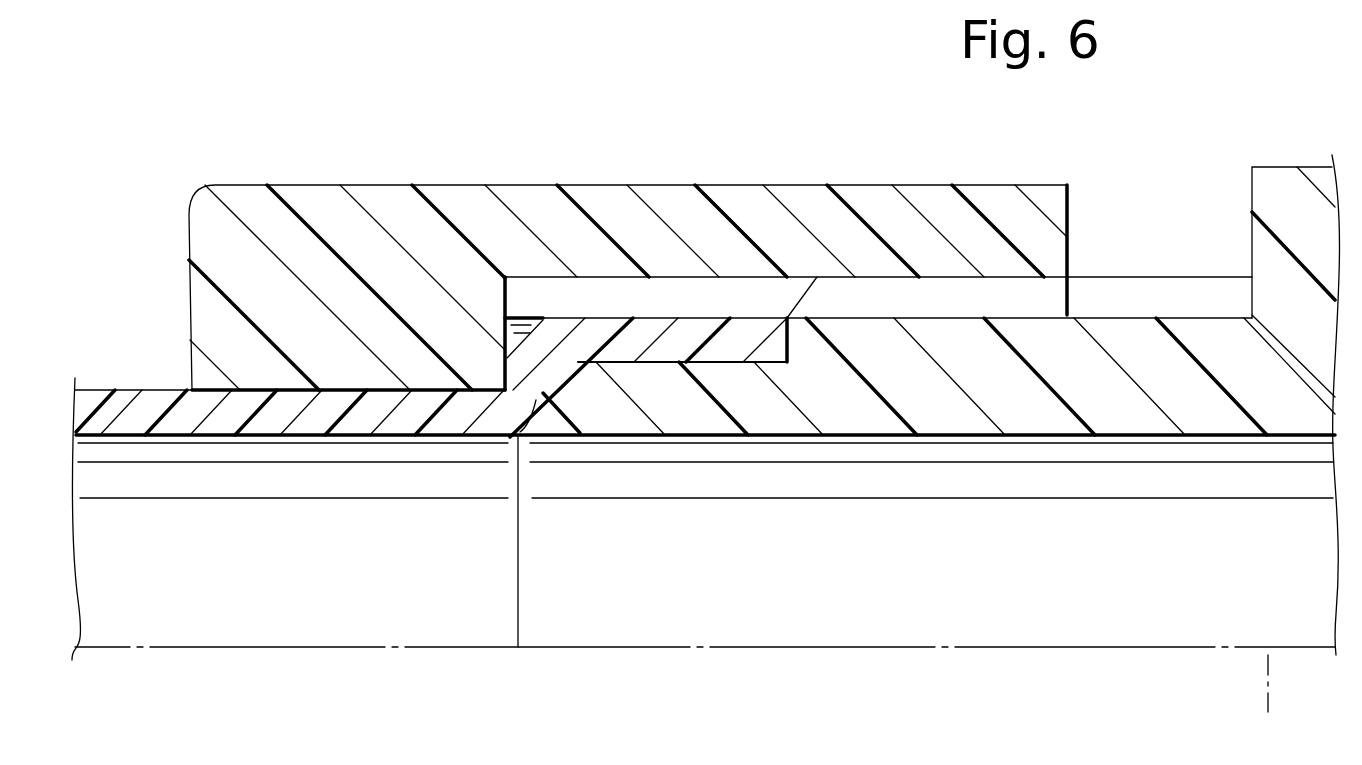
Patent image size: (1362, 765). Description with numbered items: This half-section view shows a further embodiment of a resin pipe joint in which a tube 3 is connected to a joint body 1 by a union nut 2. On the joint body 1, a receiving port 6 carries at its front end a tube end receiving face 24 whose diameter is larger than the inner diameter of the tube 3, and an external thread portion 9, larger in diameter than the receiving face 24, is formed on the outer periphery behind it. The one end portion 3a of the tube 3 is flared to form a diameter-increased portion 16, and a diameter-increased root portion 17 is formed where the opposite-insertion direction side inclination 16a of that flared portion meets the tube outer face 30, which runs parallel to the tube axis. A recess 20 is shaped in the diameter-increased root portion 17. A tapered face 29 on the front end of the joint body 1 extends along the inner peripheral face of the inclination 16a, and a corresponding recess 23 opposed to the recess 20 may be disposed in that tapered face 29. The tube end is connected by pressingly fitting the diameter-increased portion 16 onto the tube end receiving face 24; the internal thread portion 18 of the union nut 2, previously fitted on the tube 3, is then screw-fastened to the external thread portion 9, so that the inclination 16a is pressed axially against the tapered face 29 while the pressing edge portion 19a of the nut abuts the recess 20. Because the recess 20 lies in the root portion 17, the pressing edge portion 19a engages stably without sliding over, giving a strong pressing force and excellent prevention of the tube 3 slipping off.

The joint body 1 is at (1273, 167).
The union nut 2 is at (215, 183).
The tube 3 is at (97, 390).
The one end portion of the tube 3a is at (755, 333).
The receiving port 6 is at (1147, 337).
The external thread portion 9 is at (1103, 275).
The diameter-increased portion 16 is at (577, 333).
The opposite-insertion direction side inclination 16a is at (516, 330).
The diameter-increased root portion 17 is at (500, 408).
The internal thread portion 18 is at (938, 327).
The pressing edge portion 19a is at (520, 397).
The recess 20 is at (503, 374).
The recess 23 is at (503, 373).
The tube end receiving face 24 is at (707, 360).
The tapered face 29 is at (533, 335).
The tube outer face 30 is at (150, 405).